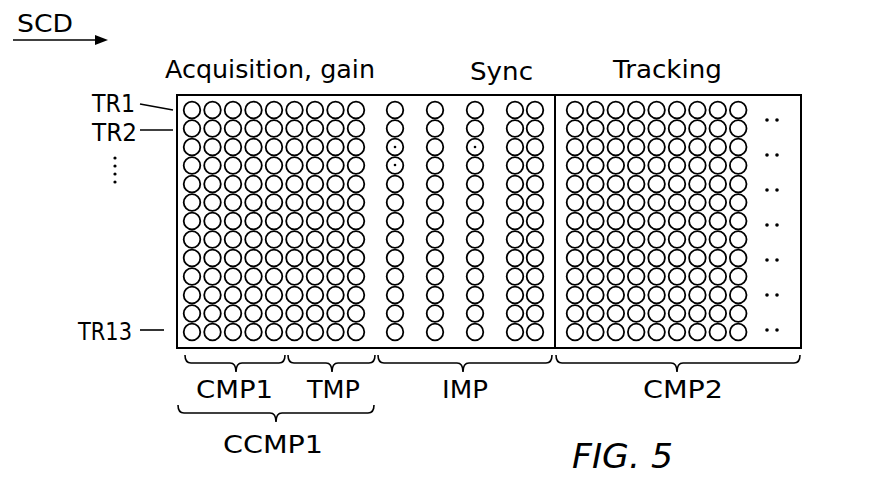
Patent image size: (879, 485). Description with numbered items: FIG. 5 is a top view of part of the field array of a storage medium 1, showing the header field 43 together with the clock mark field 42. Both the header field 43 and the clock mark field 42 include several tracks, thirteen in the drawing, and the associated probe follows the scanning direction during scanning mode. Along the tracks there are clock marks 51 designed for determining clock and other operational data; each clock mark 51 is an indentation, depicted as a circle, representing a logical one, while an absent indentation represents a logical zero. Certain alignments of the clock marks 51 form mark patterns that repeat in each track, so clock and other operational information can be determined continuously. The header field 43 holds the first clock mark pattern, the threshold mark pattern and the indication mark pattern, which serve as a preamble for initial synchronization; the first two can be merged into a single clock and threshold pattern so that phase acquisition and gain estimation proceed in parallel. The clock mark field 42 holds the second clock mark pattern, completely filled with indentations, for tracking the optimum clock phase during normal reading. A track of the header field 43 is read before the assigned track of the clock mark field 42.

The storage medium 1 is at (555, 97).
The clock marks 51 is at (338, 107).
The header field 43 is at (414, 108).
The clock mark field 42 is at (761, 106).